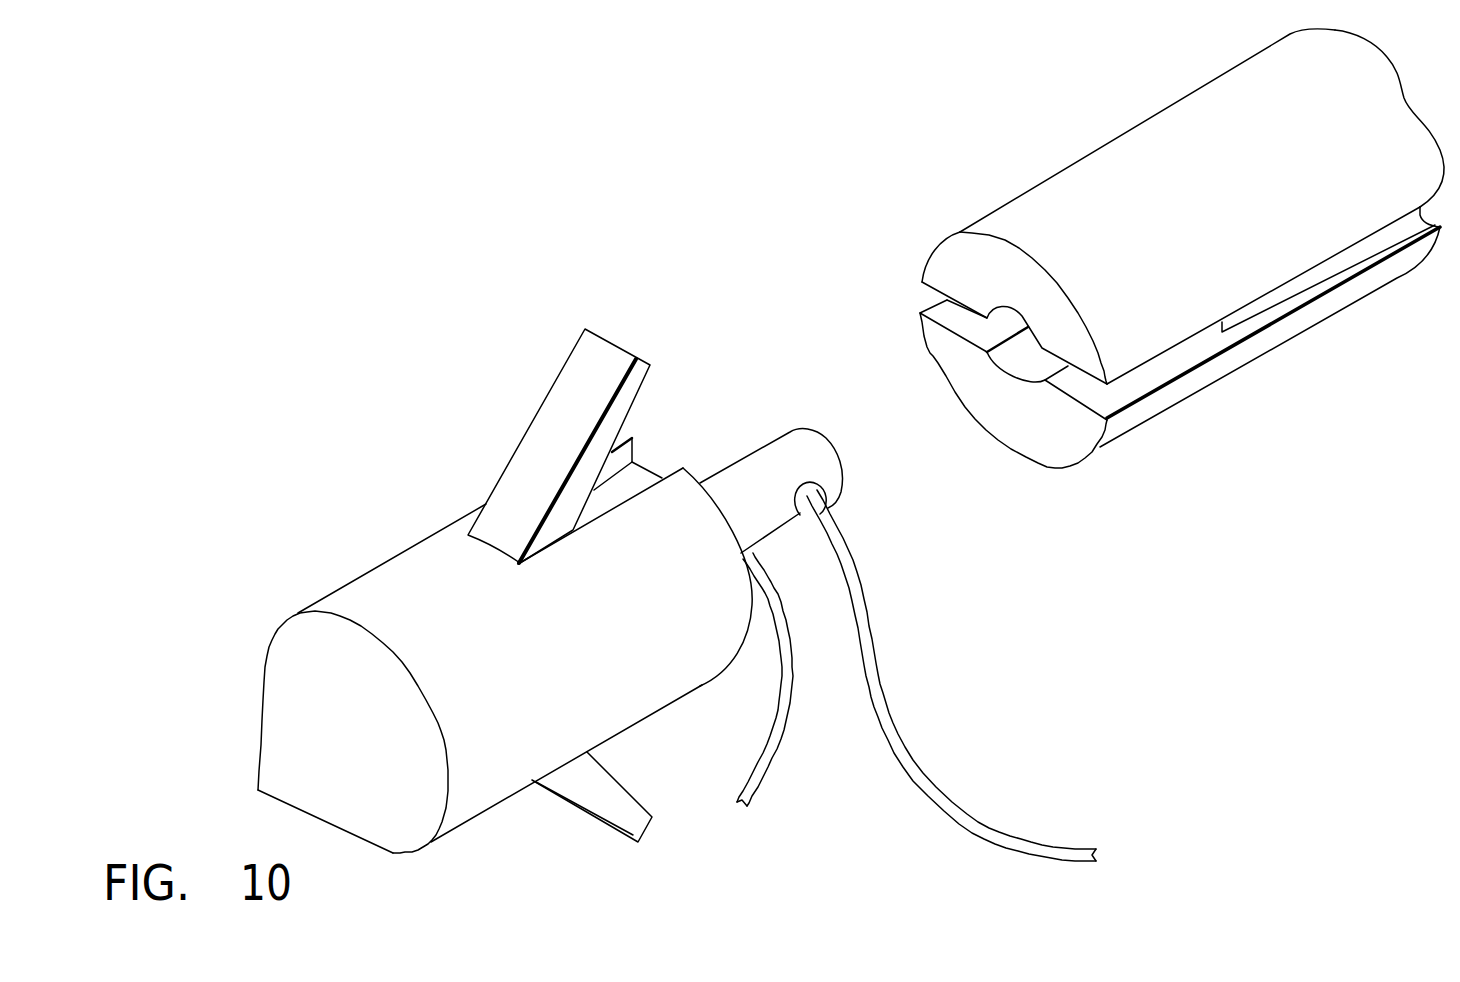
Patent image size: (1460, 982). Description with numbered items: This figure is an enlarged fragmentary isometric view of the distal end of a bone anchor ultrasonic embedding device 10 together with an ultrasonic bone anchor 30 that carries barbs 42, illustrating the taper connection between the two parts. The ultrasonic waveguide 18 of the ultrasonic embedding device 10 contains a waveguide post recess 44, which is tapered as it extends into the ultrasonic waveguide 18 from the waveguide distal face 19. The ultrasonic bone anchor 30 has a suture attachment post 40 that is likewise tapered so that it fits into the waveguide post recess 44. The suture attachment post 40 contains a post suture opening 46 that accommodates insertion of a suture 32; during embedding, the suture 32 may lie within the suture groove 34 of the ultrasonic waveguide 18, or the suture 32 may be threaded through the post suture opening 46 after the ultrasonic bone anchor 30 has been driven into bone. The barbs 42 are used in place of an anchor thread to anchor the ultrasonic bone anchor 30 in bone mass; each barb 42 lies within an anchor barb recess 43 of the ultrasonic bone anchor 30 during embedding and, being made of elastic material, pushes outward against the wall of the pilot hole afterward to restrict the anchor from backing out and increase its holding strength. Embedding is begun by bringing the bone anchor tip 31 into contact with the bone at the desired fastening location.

The ultrasonic embedding device 10 is at (814, 130).
The ultrasonic waveguide 18 is at (1100, 145).
The waveguide distal face 19 is at (1037, 467).
The ultrasonic bone anchor 30 is at (554, 650).
The bone anchor tip 31 is at (344, 748).
The suture 32 is at (960, 813).
The suture groove 34 is at (1277, 302).
The suture attachment post 40 is at (817, 432).
The barb 42 is at (550, 390).
The anchor barb recess 43 is at (633, 473).
The waveguide post recess 44 is at (1027, 373).
The post suture opening 46 is at (823, 507).